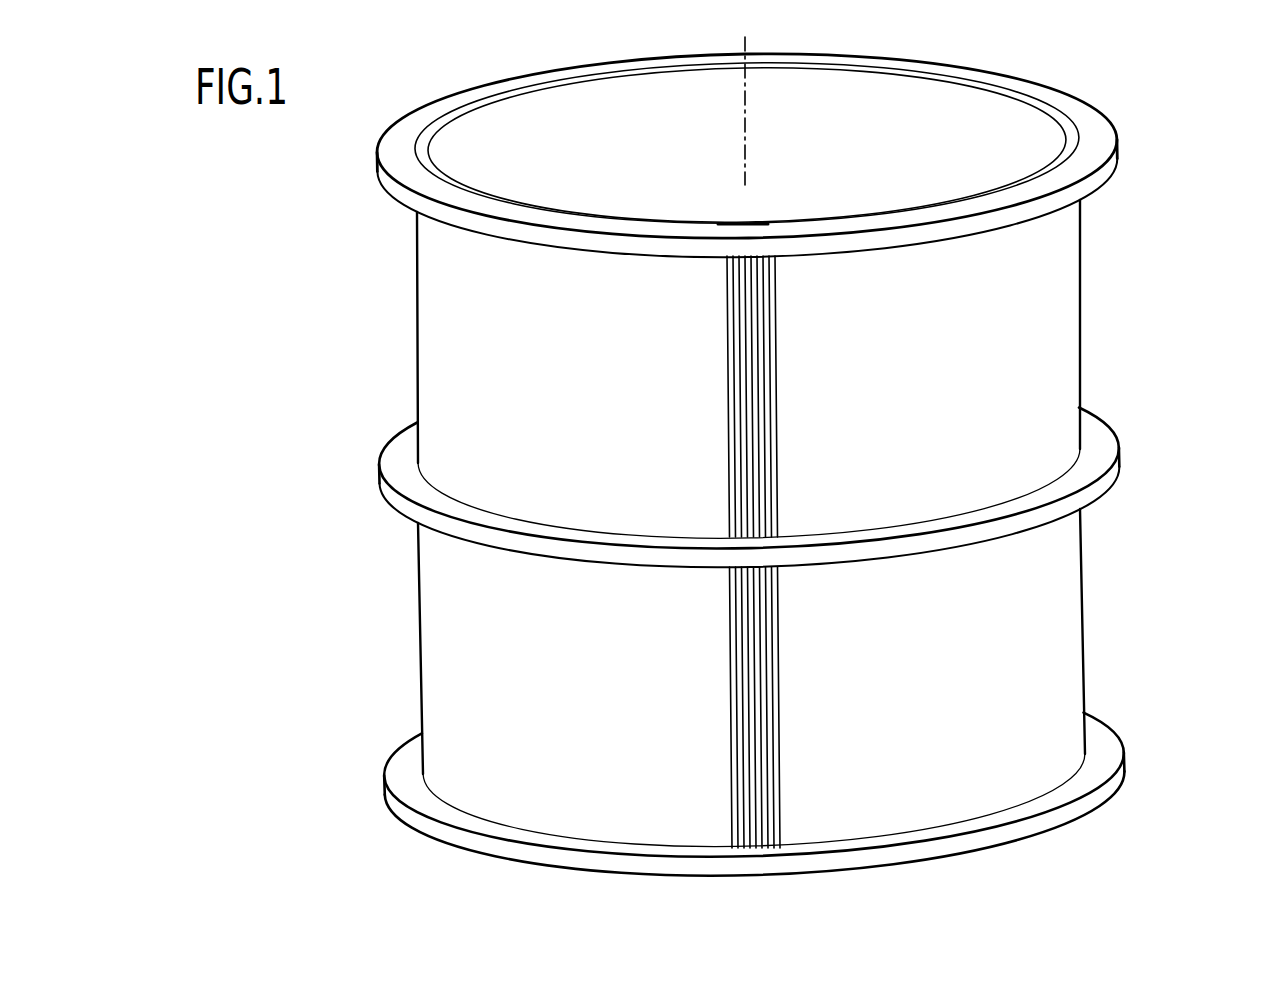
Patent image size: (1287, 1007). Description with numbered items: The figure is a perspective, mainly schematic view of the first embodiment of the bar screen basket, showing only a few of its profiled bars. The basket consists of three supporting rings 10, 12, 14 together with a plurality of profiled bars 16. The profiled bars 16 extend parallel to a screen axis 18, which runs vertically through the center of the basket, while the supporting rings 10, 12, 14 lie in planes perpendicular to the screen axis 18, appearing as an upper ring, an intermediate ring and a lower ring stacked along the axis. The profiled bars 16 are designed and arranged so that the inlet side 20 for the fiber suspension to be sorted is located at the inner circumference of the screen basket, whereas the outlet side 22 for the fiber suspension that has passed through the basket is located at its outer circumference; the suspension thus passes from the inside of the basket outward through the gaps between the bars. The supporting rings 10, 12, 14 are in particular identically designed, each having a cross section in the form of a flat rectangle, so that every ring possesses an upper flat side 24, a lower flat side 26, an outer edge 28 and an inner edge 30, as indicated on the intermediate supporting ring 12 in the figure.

The supporting ring 10 is at (1112, 105).
The supporting ring 12 is at (822, 447).
The supporting ring 14 is at (1135, 773).
The profiled bars 16 is at (750, 222).
The screen axis 18 is at (749, 44).
The inlet side 20 is at (484, 187).
The outlet side 22 is at (452, 331).
The upper flat side 24 is at (1097, 433).
The lower flat side 26 is at (1095, 503).
The outer edge 28 is at (1120, 465).
The inner edge 30 is at (1050, 119).